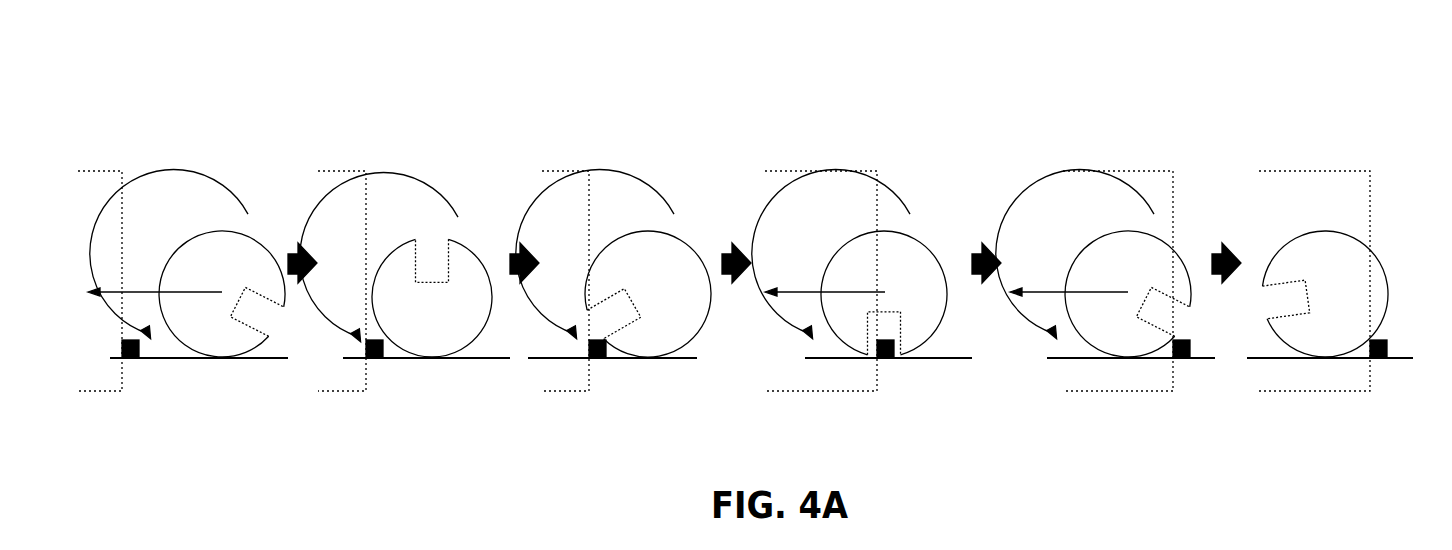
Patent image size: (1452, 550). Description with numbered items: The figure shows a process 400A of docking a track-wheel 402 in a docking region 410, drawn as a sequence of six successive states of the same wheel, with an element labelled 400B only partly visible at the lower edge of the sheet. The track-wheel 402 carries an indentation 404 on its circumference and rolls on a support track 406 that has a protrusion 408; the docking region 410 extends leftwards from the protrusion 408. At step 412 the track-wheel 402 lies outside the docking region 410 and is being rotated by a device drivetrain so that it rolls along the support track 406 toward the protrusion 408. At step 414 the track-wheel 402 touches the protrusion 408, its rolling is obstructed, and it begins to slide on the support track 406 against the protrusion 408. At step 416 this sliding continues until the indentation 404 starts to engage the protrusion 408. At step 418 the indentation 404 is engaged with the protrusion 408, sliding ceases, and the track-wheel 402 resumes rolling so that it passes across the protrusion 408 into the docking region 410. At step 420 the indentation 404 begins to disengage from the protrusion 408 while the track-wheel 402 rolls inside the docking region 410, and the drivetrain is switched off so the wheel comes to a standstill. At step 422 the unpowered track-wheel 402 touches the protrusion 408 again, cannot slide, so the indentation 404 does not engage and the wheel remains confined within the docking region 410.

The process of docking a track-wheel 400A is at (761, 270).
The track-wheel 402 is at (265, 240).
The indentation 404 is at (250, 323).
The support track 406 is at (170, 360).
The protrusion 408 is at (133, 360).
The docking region 410 is at (86, 188).
The step 412 is at (199, 271).
The step 414 is at (418, 150).
The step 416 is at (621, 150).
The step 418 is at (861, 150).
The step 420 is at (1101, 150).
The step 422 is at (1305, 149).
The rolling sequence 400B is at (1333, 549).